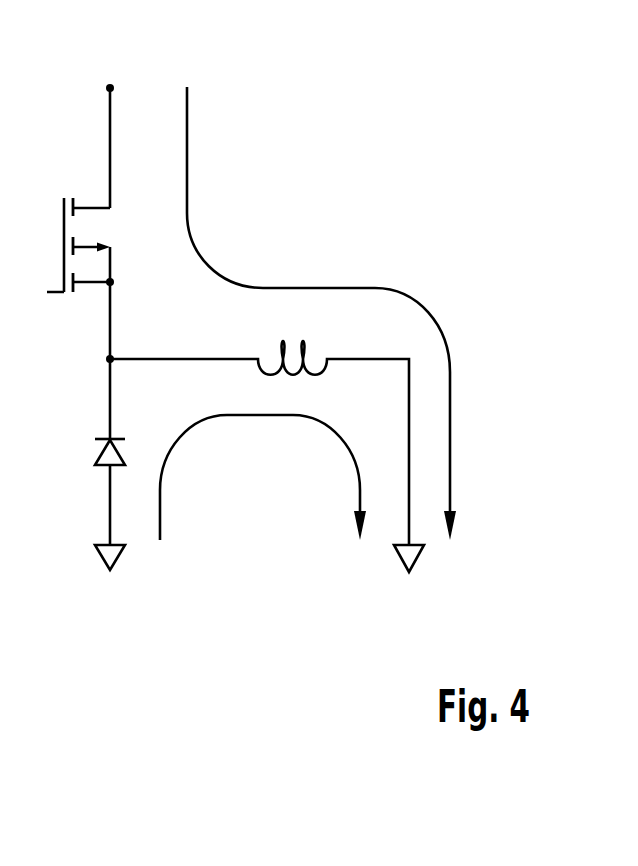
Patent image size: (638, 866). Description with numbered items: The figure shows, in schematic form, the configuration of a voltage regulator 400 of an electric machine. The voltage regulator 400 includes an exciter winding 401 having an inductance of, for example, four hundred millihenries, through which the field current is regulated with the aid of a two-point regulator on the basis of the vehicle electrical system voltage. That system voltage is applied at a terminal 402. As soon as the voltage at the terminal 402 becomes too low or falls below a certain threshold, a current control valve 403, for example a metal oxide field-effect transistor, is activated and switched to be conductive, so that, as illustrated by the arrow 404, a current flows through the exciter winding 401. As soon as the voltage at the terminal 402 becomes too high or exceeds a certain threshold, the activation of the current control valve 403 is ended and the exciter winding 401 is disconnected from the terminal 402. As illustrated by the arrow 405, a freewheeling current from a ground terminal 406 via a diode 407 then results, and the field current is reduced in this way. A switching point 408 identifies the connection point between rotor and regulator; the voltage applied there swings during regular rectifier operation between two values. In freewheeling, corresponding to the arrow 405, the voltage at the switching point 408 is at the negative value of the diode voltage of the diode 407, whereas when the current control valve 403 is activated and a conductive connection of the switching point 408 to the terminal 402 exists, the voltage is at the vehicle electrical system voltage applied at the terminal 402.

The voltage regulator 400 is at (416, 209).
The exciter winding 401 is at (324, 343).
The terminal 402 is at (110, 84).
The current control valve 403 is at (79, 175).
The arrow 404 is at (452, 401).
The arrow 405 is at (195, 430).
The ground terminal 406 is at (109, 545).
The diode 407 is at (81, 438).
The switching point 408 is at (110, 358).